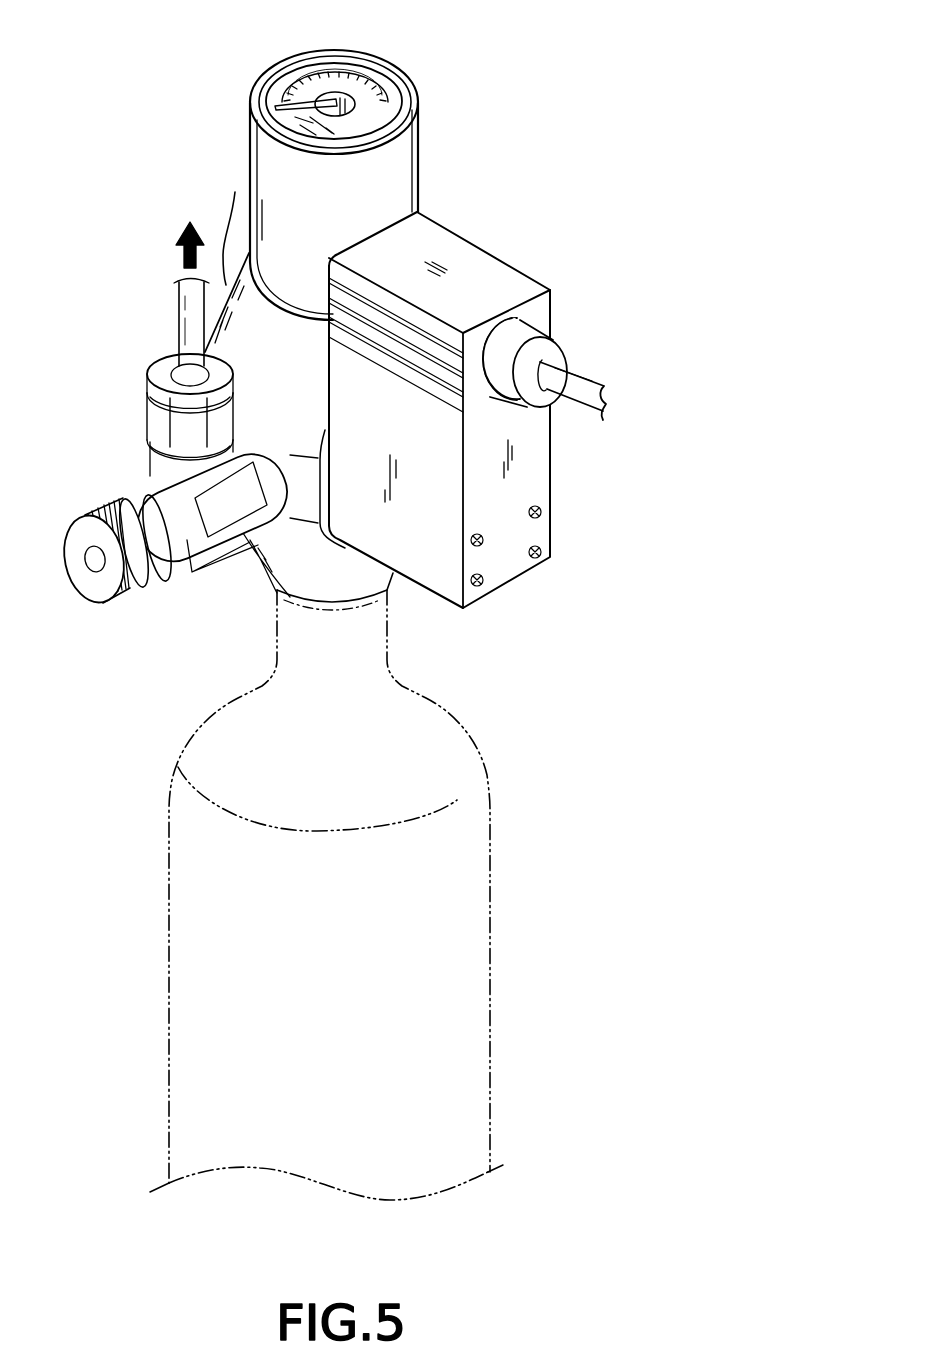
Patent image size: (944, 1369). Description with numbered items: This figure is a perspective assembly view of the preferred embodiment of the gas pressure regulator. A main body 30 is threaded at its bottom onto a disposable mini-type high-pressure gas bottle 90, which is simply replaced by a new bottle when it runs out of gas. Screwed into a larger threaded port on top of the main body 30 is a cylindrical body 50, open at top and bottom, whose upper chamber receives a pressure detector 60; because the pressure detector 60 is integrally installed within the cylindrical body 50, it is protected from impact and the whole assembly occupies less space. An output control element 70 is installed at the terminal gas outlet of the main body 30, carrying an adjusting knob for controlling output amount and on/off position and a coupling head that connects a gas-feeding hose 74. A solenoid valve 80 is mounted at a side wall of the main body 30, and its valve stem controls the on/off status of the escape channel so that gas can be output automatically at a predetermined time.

The main body 30 is at (235, 192).
The cylindrical body 50 is at (445, 143).
The pressure detector 60 is at (374, 93).
The output control element 70 is at (118, 455).
The gas-feeding hose 74 is at (185, 317).
The solenoid valve 80 is at (515, 282).
The high-pressure gas bottle 90 is at (492, 896).